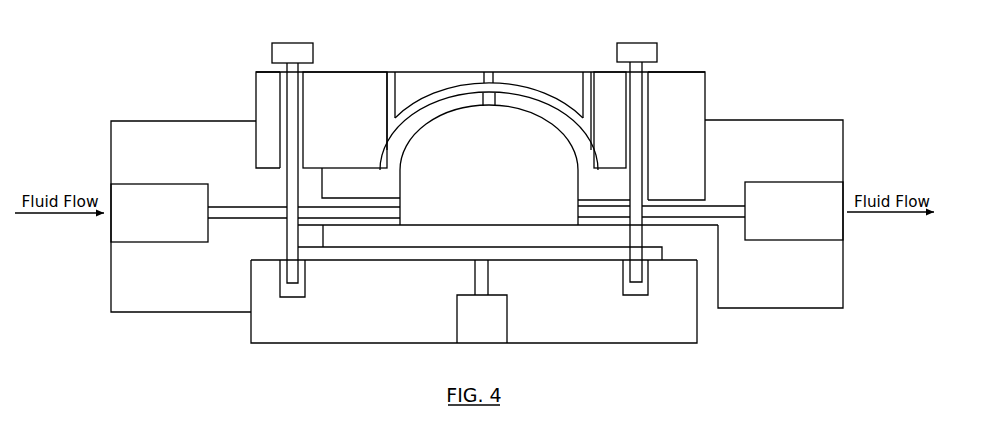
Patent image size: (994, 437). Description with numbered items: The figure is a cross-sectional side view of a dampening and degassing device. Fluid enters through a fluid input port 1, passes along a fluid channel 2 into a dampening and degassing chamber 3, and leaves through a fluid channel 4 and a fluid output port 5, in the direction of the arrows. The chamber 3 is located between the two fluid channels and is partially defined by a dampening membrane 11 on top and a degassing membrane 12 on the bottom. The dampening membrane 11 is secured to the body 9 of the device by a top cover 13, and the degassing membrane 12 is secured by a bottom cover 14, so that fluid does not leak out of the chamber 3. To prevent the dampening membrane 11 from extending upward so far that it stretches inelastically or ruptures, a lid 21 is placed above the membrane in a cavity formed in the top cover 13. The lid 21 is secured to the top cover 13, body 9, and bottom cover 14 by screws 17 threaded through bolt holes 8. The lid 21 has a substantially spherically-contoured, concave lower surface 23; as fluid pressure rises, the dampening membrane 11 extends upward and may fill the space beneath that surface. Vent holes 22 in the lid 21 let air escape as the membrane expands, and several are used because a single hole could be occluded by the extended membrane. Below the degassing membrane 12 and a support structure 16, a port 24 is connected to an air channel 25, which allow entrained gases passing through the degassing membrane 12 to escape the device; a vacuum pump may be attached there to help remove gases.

The fluid input port 1 is at (155, 221).
The fluid channel 2 is at (230, 217).
The dampening and degassing chamber 3 is at (484, 189).
The fluid channel 4 is at (728, 215).
The fluid output port 5 is at (789, 219).
The bolt holes 8 is at (282, 91).
The body 9 is at (155, 159).
The dampening membrane 11 is at (348, 191).
The degassing membrane 12 is at (411, 245).
The top cover 13 is at (259, 118).
The bottom cover 14 is at (339, 310).
The support structure 16 is at (567, 261).
The screws 17 is at (292, 53).
The lid 21 is at (428, 74).
The vent hole 22 is at (391, 81).
The concave lower surface 23 is at (423, 107).
The port 24 is at (473, 327).
The air channel 25 is at (480, 278).